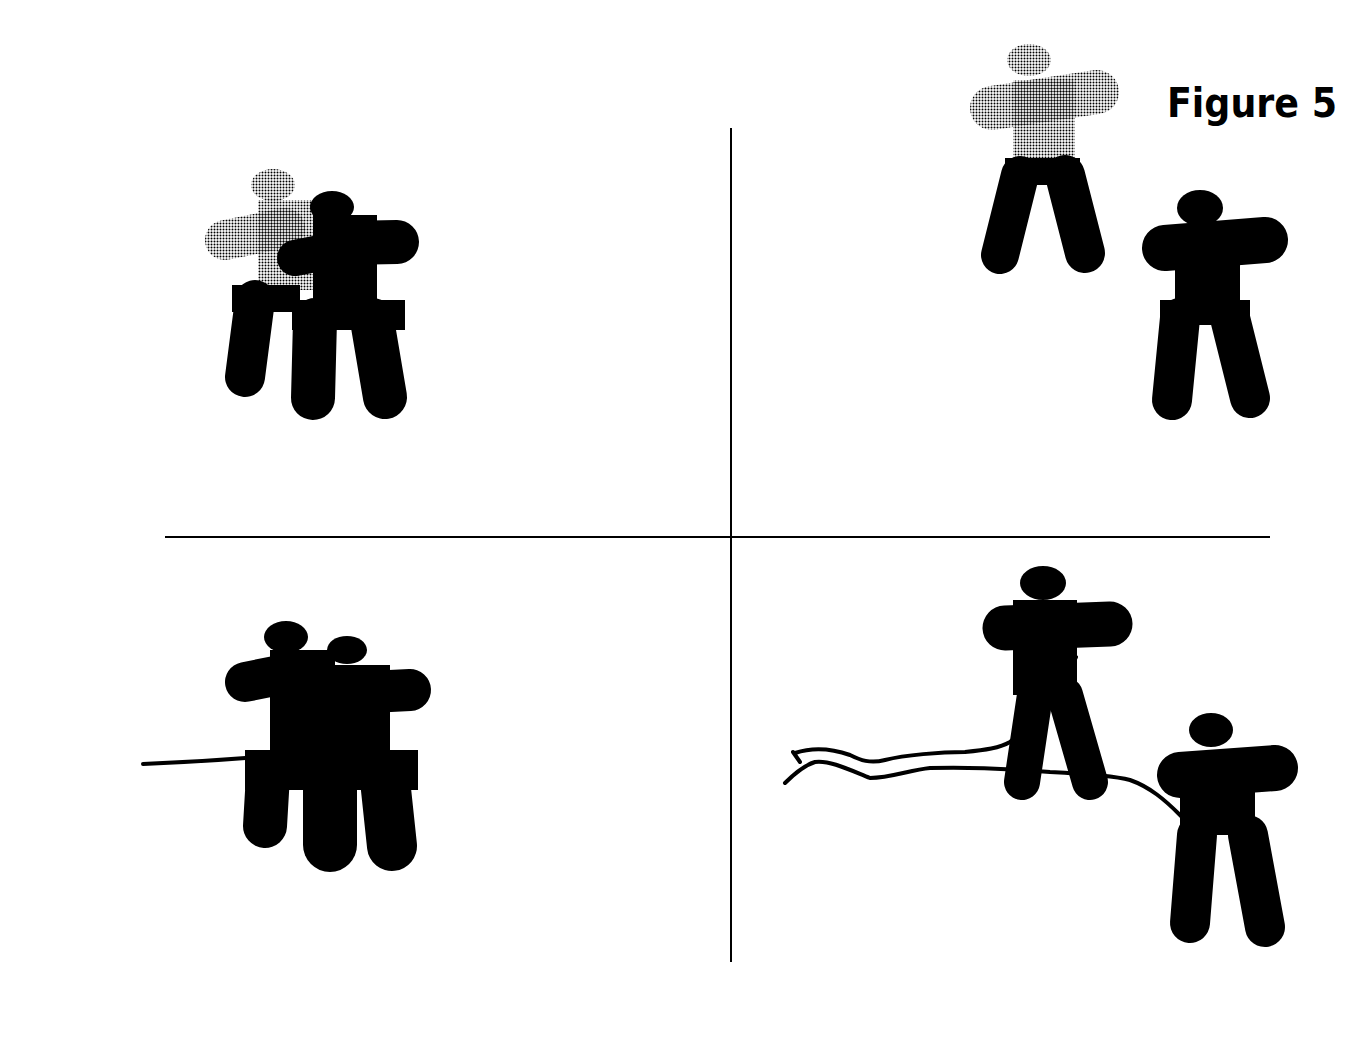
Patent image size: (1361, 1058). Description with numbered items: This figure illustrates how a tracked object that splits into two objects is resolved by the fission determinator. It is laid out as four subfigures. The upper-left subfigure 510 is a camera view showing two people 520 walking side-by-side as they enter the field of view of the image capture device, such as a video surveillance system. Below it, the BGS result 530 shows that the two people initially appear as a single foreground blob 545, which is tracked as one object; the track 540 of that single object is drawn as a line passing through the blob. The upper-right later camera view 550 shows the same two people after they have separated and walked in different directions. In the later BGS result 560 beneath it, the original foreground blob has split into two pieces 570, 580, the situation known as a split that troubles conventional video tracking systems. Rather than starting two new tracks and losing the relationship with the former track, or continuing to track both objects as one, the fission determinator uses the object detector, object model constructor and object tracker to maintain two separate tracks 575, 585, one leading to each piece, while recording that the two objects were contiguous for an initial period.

The subfigure 510 is at (467, 329).
The two people 520 is at (315, 268).
The BGS result 530 is at (426, 704).
The track 540 is at (238, 744).
The single foreground blob 545 is at (331, 724).
The later camera view 550 is at (1012, 282).
The later BGS result 560 is at (1017, 744).
The first piece 570 is at (1075, 674).
The first separate track 575 is at (934, 709).
The second piece 580 is at (1227, 810).
The second separate track 585 is at (997, 806).